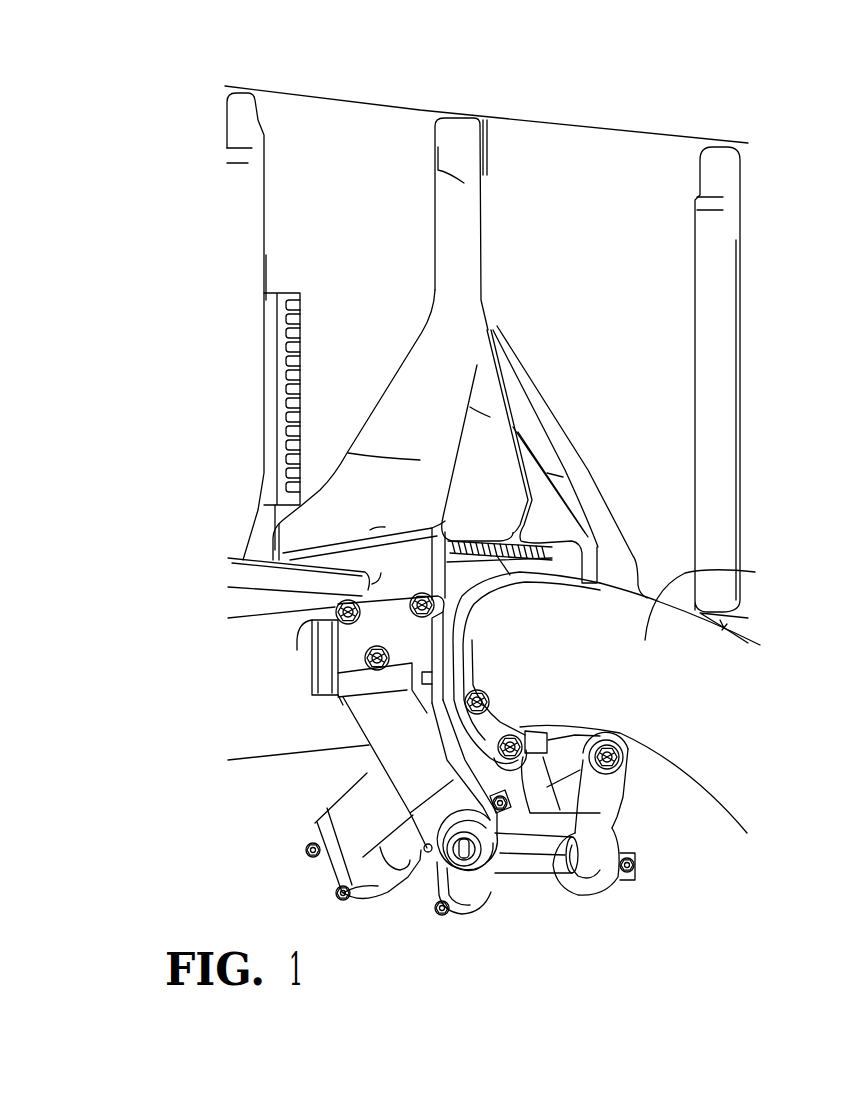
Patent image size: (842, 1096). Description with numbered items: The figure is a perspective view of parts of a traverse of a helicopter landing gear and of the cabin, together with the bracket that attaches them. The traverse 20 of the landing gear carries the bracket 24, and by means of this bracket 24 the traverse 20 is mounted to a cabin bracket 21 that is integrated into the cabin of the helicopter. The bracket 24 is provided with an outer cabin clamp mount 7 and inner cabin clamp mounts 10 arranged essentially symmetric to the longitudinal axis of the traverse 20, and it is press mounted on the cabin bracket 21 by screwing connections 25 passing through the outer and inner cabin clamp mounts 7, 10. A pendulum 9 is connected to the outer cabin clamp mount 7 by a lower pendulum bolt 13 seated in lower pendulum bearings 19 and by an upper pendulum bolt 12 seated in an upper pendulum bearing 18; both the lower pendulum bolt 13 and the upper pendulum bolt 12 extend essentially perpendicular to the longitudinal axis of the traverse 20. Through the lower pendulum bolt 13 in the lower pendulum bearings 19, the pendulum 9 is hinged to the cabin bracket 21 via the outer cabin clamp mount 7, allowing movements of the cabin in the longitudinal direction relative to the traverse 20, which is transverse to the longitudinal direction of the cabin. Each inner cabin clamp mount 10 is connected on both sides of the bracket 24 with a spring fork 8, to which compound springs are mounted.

The outer cabin clamp mount 7 is at (370, 713).
The spring fork 8 is at (322, 868).
The pendulum 9 is at (605, 812).
The inner cabin clamp mount 10 is at (447, 657).
The upper pendulum bolt 12 is at (385, 631).
The upper pendulum bearing 18 is at (563, 728).
The lower pendulum bolt 13 is at (535, 860).
The lower pendulum bearings 19 is at (490, 887).
The traverse 20 is at (748, 573).
The cabin bracket 21 is at (553, 518).
The bracket 24 is at (656, 854).
The screwing connections 25 is at (318, 648).